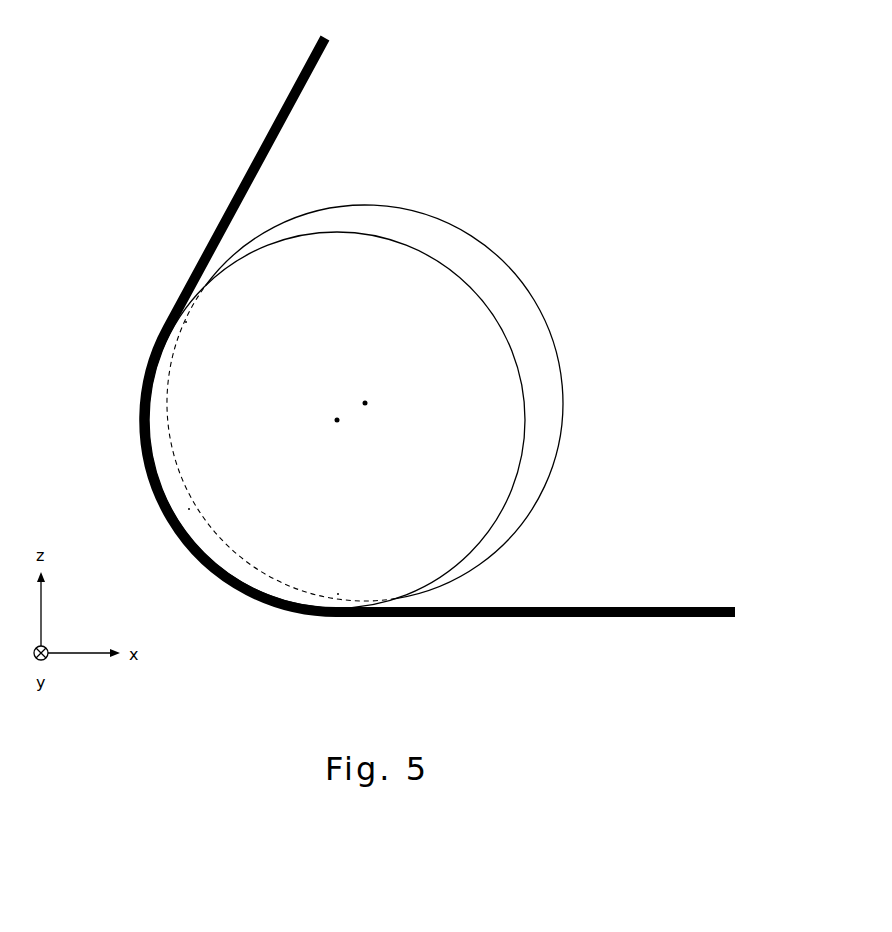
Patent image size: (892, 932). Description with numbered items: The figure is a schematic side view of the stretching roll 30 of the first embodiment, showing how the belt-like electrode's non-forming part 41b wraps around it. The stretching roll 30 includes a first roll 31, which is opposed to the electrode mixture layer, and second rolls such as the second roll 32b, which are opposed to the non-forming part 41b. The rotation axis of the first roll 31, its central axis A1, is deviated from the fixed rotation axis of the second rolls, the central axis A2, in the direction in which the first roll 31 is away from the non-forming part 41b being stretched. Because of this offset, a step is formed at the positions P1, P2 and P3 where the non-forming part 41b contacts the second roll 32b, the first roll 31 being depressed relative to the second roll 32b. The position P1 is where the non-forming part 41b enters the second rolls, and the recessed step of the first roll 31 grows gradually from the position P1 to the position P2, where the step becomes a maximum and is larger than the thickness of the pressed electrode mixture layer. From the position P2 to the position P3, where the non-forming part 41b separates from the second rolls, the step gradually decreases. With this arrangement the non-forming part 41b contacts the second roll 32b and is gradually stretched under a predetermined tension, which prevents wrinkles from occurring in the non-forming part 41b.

The non-forming part 41b is at (308, 57).
The stretching roll 30 is at (400, 388).
The first roll 31 is at (553, 450).
The second roll 32b is at (522, 378).
The central axis A1 is at (362, 400).
The central axis A2 is at (339, 423).
The position P1 is at (181, 319).
The position P2 is at (178, 515).
The position P3 is at (338, 604).